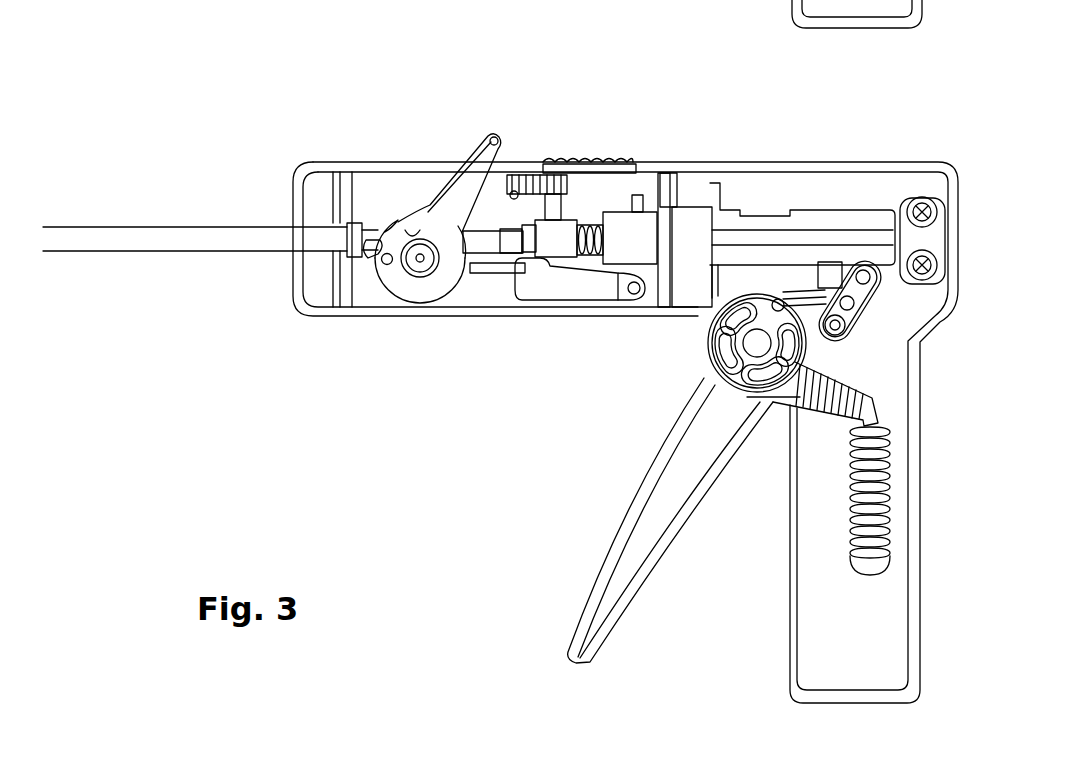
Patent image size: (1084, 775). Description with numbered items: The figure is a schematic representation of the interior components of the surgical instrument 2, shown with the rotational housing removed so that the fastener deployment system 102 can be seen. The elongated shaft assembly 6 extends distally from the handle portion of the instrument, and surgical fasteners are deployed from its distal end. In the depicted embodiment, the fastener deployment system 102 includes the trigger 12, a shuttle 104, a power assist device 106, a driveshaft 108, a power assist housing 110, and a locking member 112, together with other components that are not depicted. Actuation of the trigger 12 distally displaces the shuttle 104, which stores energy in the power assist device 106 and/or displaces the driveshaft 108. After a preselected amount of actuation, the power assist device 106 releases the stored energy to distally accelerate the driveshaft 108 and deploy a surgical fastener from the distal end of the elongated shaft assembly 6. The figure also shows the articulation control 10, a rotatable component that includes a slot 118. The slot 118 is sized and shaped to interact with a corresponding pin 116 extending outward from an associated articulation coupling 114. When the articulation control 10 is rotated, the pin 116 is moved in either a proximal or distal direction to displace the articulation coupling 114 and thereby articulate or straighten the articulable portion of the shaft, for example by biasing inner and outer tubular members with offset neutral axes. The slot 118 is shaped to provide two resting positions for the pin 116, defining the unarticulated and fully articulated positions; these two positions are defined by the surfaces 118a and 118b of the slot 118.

The surgical instrument 2 is at (155, 192).
The elongated shaft assembly 6 is at (258, 227).
The articulation control 10 is at (488, 138).
The trigger 12 is at (618, 568).
The fastener deployment system 102 is at (690, 195).
The shuttle 104 is at (773, 240).
The power assist device 106 is at (594, 257).
The driveshaft 108 is at (522, 165).
The power assist housing 110 is at (640, 245).
The locking member 112 is at (488, 272).
The articulation coupling 114 is at (368, 222).
The pin 116 is at (381, 263).
The slot 118 is at (405, 208).
The surface of the slot 118a is at (418, 232).
The surface of the slot 118b is at (372, 248).